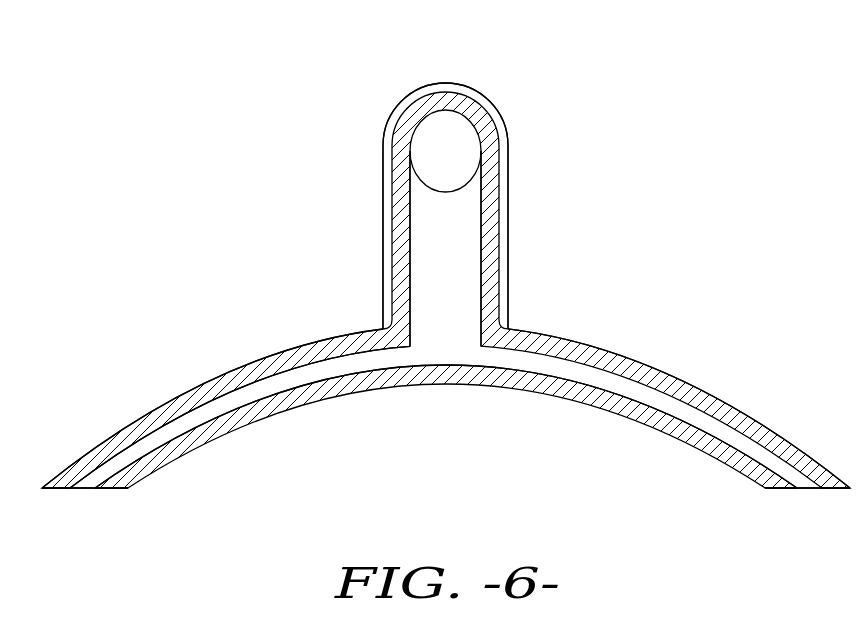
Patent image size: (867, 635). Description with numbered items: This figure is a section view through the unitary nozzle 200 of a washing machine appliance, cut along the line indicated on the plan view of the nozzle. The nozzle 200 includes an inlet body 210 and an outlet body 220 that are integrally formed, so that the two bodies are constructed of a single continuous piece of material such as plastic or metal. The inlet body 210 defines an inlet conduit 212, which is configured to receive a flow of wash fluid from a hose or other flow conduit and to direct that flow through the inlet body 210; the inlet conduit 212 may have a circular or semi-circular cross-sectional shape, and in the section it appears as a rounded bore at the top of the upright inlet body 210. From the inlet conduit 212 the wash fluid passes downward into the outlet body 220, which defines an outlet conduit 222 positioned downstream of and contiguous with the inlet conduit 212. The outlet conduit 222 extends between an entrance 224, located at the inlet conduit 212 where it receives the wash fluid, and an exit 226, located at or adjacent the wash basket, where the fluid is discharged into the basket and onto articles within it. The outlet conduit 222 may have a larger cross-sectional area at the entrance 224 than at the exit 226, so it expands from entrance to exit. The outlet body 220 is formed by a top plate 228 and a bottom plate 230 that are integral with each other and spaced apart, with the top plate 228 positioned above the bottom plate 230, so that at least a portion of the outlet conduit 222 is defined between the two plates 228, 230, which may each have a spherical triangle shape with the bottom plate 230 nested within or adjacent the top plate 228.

The nozzle 200 is at (212, 193).
The inlet body 210 is at (492, 190).
The inlet conduit 212 is at (450, 240).
The outlet body 220 is at (88, 452).
The outlet conduit 222 is at (298, 373).
The entrance 224 is at (447, 348).
The exit 226 is at (80, 490).
The top plate 228 is at (202, 392).
The bottom plate 230 is at (446, 426).